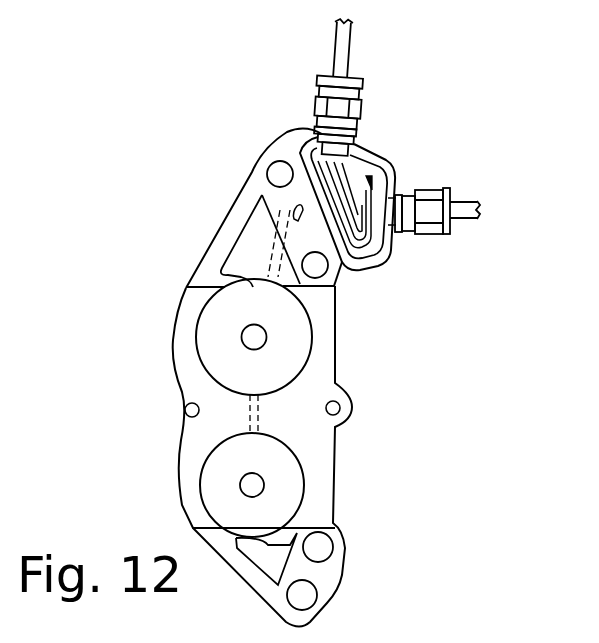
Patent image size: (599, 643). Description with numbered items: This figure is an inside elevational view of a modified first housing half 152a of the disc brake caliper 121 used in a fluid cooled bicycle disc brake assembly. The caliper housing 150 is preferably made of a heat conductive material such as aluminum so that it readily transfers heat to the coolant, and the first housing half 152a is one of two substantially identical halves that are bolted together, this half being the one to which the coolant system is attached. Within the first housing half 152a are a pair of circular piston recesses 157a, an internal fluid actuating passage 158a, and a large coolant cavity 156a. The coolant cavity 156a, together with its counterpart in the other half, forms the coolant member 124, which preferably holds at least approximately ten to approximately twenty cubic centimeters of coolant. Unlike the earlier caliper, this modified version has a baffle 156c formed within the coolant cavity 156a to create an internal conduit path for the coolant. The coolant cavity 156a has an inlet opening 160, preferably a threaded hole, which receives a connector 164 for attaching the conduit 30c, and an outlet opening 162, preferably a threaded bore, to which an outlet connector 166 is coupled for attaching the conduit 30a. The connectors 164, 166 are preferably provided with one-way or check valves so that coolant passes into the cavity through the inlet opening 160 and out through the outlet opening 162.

The conduit 30a is at (357, 42).
The conduit 30c is at (462, 203).
The disc brake caliper 121 is at (175, 388).
The coolant member 124 is at (376, 157).
The housing 150 is at (158, 211).
The first housing half 152a is at (336, 483).
The coolant cavity 156a is at (386, 168).
The baffle 156c is at (302, 153).
The circular piston recesses 157a is at (273, 447).
The internal fluid actuating passage 158a is at (273, 255).
The inlet opening 160 is at (393, 240).
The outlet opening 162 is at (364, 138).
The connector 164 is at (425, 237).
The outlet connector 166 is at (313, 118).